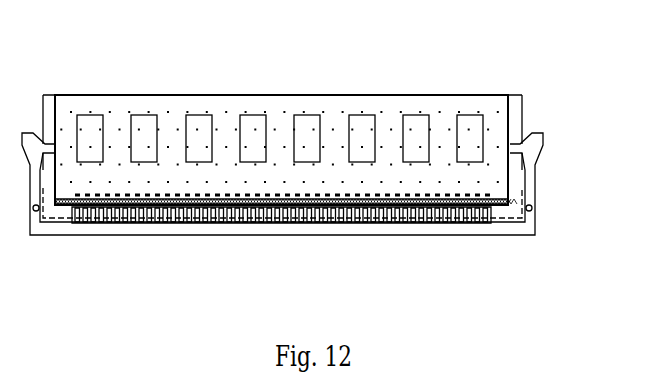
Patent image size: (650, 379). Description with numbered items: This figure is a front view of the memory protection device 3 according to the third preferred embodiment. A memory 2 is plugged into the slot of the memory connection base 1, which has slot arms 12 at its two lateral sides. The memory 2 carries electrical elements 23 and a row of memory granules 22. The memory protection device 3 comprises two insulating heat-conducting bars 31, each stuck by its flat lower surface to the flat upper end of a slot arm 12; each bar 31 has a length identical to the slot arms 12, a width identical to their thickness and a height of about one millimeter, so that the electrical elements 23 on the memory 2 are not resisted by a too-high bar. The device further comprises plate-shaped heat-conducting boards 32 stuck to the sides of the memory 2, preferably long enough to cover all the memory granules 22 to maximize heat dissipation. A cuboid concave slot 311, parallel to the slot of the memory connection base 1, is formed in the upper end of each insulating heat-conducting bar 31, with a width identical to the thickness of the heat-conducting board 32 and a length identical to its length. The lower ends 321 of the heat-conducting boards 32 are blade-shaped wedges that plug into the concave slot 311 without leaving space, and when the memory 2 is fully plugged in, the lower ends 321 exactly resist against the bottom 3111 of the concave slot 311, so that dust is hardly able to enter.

The memory connection base 1 is at (528, 225).
The memory 2 is at (248, 100).
The memory granules 22 is at (87, 123).
The electrical elements 23 is at (320, 200).
The heat-conducting board 32 is at (438, 112).
The memory protection device 3 is at (108, 202).
The insulating heat-conducting bar 31 is at (209, 208).
The concave slot 311 is at (265, 205).
The lower end of the heat-conducting board 321 is at (323, 203).
The bottom of the concave slot 3111 is at (405, 208).
The slot arm 12 is at (492, 208).